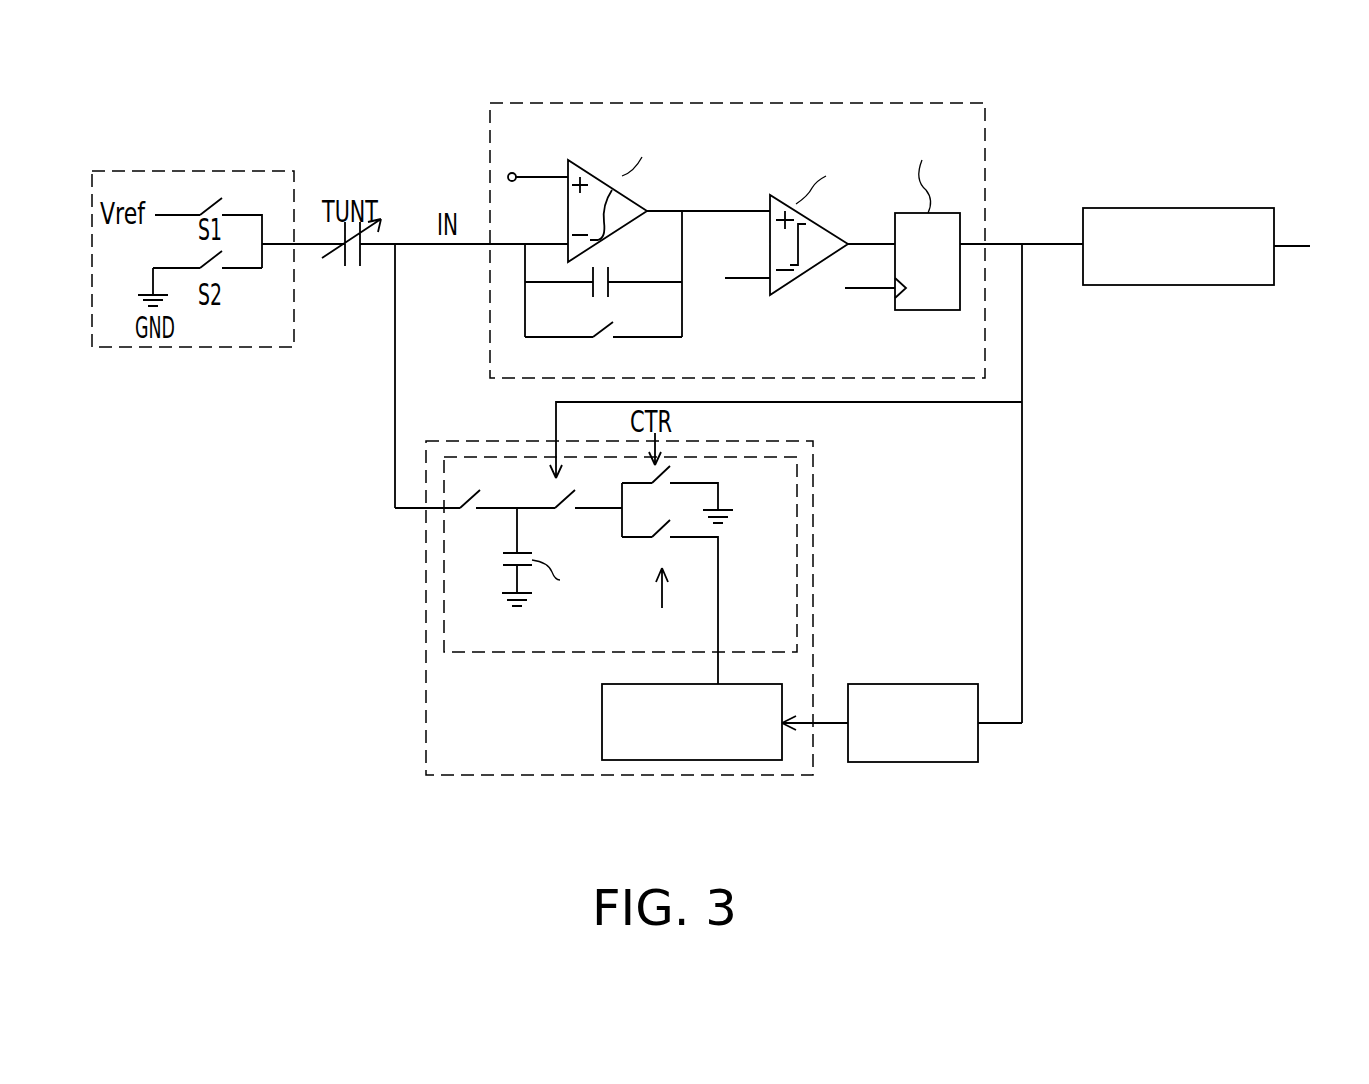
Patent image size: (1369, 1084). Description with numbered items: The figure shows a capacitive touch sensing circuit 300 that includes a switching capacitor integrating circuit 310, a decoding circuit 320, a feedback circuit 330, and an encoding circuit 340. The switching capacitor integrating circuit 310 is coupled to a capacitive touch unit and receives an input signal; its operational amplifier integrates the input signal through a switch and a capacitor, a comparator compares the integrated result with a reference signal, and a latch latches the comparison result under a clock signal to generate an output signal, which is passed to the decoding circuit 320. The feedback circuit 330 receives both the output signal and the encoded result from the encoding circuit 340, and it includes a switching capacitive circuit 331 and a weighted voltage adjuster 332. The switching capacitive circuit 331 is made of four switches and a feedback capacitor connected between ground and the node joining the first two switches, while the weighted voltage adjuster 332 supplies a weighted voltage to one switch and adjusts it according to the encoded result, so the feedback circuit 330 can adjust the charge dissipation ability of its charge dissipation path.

The capacitive touch sensing circuit 300 is at (1215, 806).
The switching capacitor integrating circuit 310 is at (874, 103).
The decoding circuit 320 is at (1153, 208).
The feedback circuit 330 is at (813, 503).
The switching capacitive circuit 331 is at (797, 577).
The weighted voltage adjuster 332 is at (602, 721).
The encoding circuit 340 is at (912, 762).